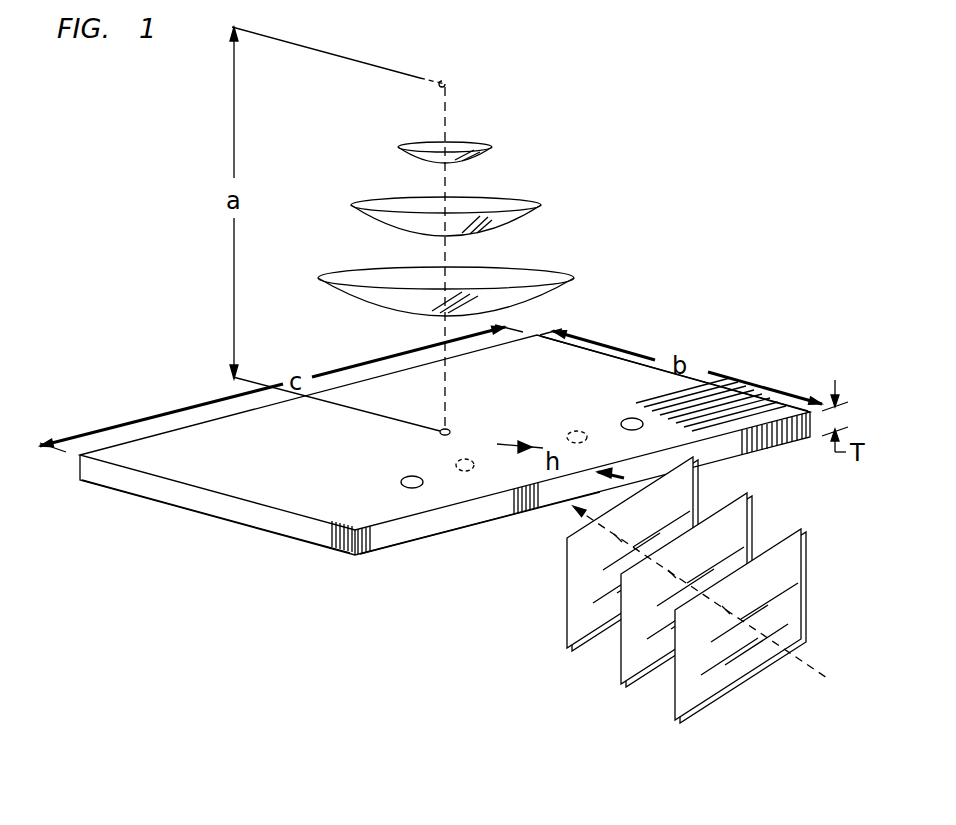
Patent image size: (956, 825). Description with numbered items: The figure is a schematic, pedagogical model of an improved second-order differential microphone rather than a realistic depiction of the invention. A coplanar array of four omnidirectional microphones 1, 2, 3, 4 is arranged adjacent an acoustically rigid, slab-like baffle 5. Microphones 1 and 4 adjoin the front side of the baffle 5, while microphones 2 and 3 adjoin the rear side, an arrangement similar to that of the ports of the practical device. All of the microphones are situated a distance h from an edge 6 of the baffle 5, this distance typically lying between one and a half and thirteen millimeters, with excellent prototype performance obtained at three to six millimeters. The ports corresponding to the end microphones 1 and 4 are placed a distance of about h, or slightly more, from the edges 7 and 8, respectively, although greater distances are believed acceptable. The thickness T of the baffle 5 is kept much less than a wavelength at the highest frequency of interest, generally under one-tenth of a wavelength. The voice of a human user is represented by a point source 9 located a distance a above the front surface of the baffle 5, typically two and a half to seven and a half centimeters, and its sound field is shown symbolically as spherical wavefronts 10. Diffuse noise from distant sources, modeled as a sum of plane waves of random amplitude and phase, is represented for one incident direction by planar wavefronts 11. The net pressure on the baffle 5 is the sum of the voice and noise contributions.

The omnidirectional microphone 1 is at (423, 482).
The omnidirectional microphone 2 is at (456, 465).
The omnidirectional microphone 3 is at (587, 437).
The omnidirectional microphone 4 is at (643, 424).
The baffle 5 is at (320, 481).
The edge of the baffle 6 is at (400, 540).
The edge of the baffle 7 is at (217, 509).
The edge of the baffle 8 is at (627, 362).
The point source 9 is at (449, 83).
The spherical wavefronts 10 is at (538, 207).
The planar wavefronts 11 is at (672, 712).